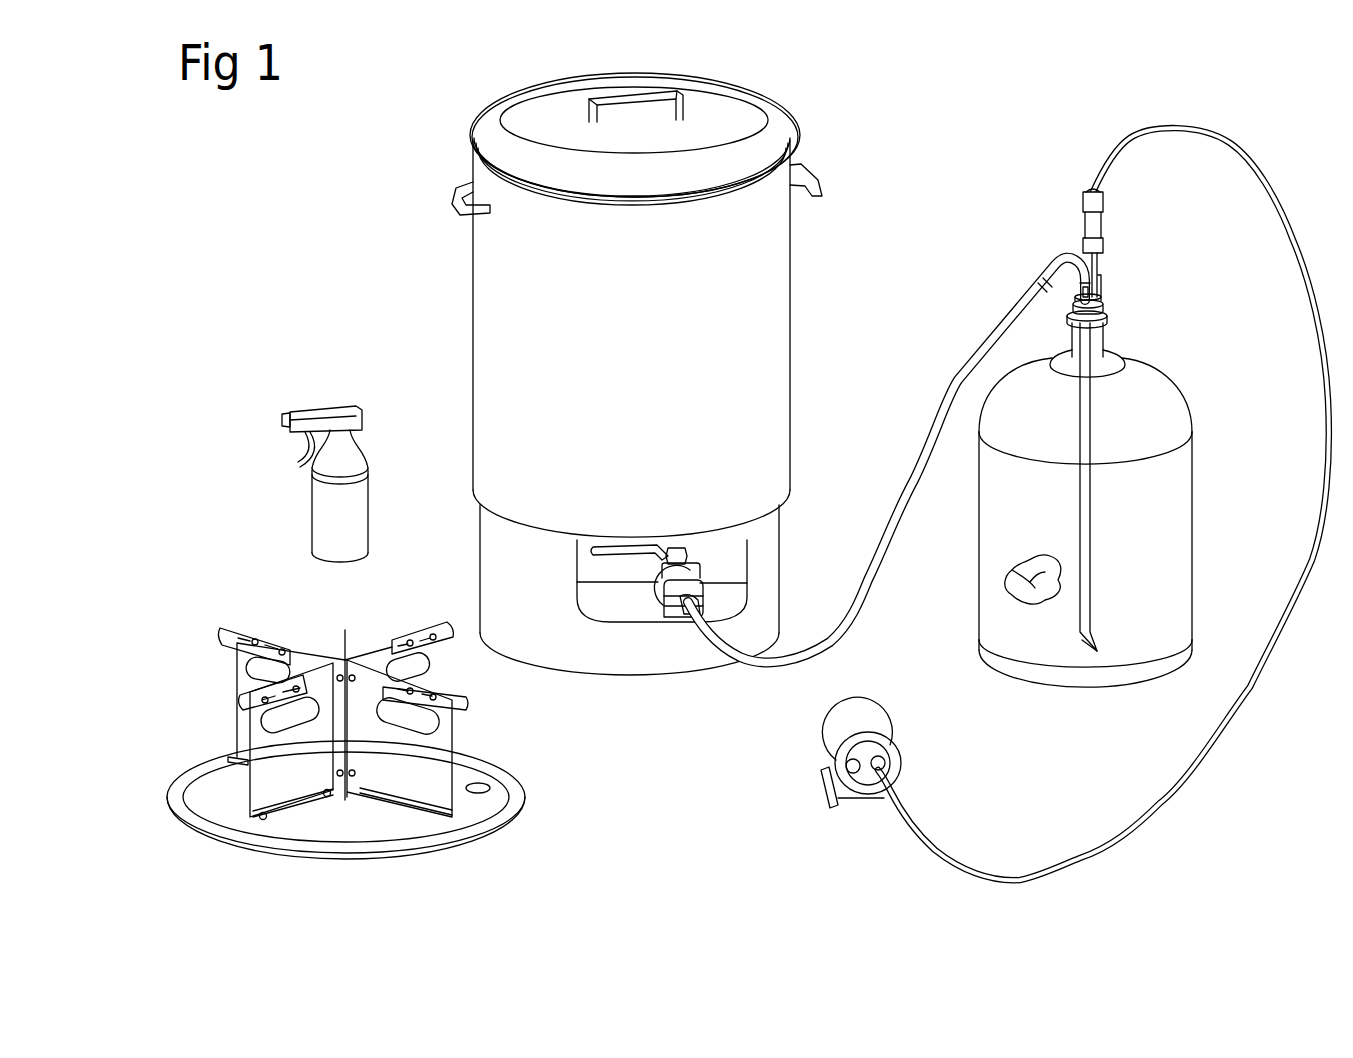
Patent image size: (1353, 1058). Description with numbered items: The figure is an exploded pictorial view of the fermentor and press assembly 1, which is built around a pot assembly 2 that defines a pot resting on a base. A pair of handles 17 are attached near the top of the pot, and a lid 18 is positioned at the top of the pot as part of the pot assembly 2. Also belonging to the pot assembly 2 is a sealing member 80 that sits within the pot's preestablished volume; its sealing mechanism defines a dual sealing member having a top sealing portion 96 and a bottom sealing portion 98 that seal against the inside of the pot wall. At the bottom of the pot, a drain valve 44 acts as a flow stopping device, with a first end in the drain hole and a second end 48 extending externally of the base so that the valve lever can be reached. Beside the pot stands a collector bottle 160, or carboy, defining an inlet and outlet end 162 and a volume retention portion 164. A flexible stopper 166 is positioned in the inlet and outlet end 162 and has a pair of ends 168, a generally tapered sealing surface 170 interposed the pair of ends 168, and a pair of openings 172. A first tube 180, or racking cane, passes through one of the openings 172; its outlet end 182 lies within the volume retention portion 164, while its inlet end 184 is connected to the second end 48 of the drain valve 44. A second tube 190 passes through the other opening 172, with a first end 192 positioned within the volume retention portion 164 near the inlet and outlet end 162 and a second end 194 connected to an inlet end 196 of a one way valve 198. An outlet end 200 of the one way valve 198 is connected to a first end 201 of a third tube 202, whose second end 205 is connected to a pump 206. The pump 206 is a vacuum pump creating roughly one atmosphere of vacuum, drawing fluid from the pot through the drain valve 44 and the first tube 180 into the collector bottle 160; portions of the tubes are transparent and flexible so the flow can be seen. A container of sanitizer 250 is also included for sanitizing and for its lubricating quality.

The fermentor and press assembly 1 is at (366, 256).
The pot assembly 2 is at (344, 310).
The handles 17 is at (453, 187).
The lid 18 is at (542, 113).
The drain valve 44 is at (703, 587).
The second end 48 is at (660, 613).
The sealing member 80 is at (355, 757).
The top sealing portion 96 is at (193, 760).
The bottom sealing portion 98 is at (250, 840).
The collector bottle 160 is at (1150, 522).
The inlet and outlet end 162 is at (1110, 318).
The volume retention portion 164 is at (1025, 585).
The stopper 166 is at (1106, 302).
The pair of ends 168 is at (1074, 293).
The sealing surface 170 is at (1105, 311).
The pair of openings 172 is at (1096, 286).
The first tube 180 is at (1064, 254).
The outlet end 182 is at (1098, 645).
The inlet end 184 is at (677, 620).
The second tube 190 is at (1100, 285).
The first end 192 is at (1093, 375).
The second end 194 is at (1100, 267).
The inlet end 196 is at (1103, 278).
The one way valve 198 is at (1098, 228).
The outlet end 200 is at (1097, 192).
The first end 201 is at (1088, 192).
The third tube 202 is at (1268, 181).
The second end 205 is at (886, 770).
The pump 206 is at (865, 713).
The container of sanitizer 250 is at (323, 500).